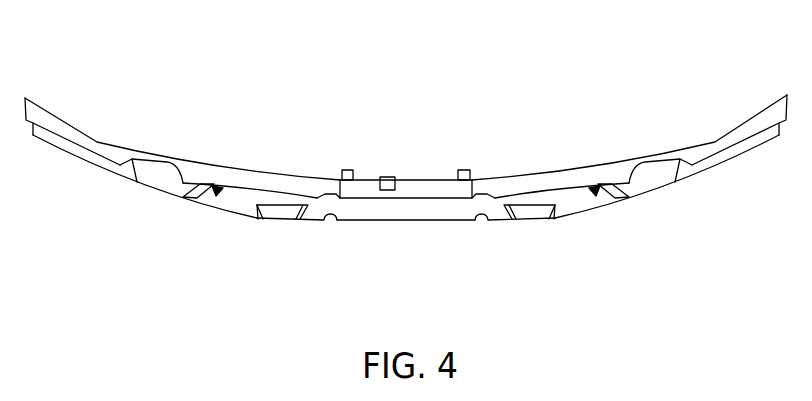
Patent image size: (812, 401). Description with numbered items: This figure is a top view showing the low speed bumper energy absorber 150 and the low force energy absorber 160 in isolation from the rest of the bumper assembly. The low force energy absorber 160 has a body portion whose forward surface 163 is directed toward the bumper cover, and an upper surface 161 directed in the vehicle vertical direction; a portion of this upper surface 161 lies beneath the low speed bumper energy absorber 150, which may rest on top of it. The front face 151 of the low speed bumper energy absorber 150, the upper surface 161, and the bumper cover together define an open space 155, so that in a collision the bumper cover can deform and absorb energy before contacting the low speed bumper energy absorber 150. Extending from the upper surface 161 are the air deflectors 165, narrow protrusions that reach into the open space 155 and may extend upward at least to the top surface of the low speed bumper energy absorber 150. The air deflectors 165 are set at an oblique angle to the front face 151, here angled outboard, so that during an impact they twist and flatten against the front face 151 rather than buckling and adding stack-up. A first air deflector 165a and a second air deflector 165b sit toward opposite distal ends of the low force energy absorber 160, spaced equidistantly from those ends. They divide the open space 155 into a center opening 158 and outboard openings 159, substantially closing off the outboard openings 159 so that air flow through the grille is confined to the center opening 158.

The low speed bumper energy absorber 150 is at (90, 100).
The front face 151 is at (576, 207).
The open space 155 is at (467, 232).
The center opening 158 is at (410, 232).
The outboard openings 159 is at (63, 163).
The low force energy absorber 160 is at (104, 185).
The upper surface 161 is at (153, 181).
The forward surface 163 is at (362, 222).
The air deflectors 165 is at (183, 212).
The first air deflector 165a is at (614, 204).
The second air deflector 165b is at (191, 205).